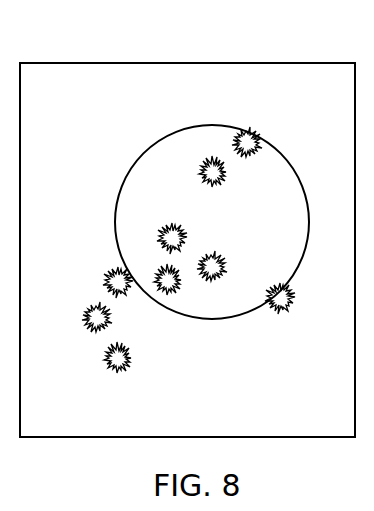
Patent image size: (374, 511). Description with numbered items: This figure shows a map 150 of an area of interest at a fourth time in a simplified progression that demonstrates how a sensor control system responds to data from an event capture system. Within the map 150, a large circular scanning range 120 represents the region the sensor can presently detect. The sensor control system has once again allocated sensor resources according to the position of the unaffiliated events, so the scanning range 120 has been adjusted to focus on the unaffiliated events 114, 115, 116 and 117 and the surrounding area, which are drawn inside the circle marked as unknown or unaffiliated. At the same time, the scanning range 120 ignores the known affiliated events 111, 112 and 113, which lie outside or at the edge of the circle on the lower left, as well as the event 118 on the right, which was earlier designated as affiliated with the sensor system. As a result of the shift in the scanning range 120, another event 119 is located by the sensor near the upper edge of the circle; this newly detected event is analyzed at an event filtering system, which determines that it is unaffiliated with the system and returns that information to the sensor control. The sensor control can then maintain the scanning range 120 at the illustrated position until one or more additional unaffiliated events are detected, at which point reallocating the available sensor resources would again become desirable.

The map 150 is at (140, 46).
The scanning range 120 is at (139, 159).
The event 119 is at (260, 137).
The event 117 is at (199, 181).
The event 114 is at (187, 236).
The event 115 is at (228, 264).
The event 116 is at (183, 290).
The event 111 is at (106, 274).
The event 112 is at (90, 331).
The event 113 is at (110, 371).
The event 118 is at (290, 310).